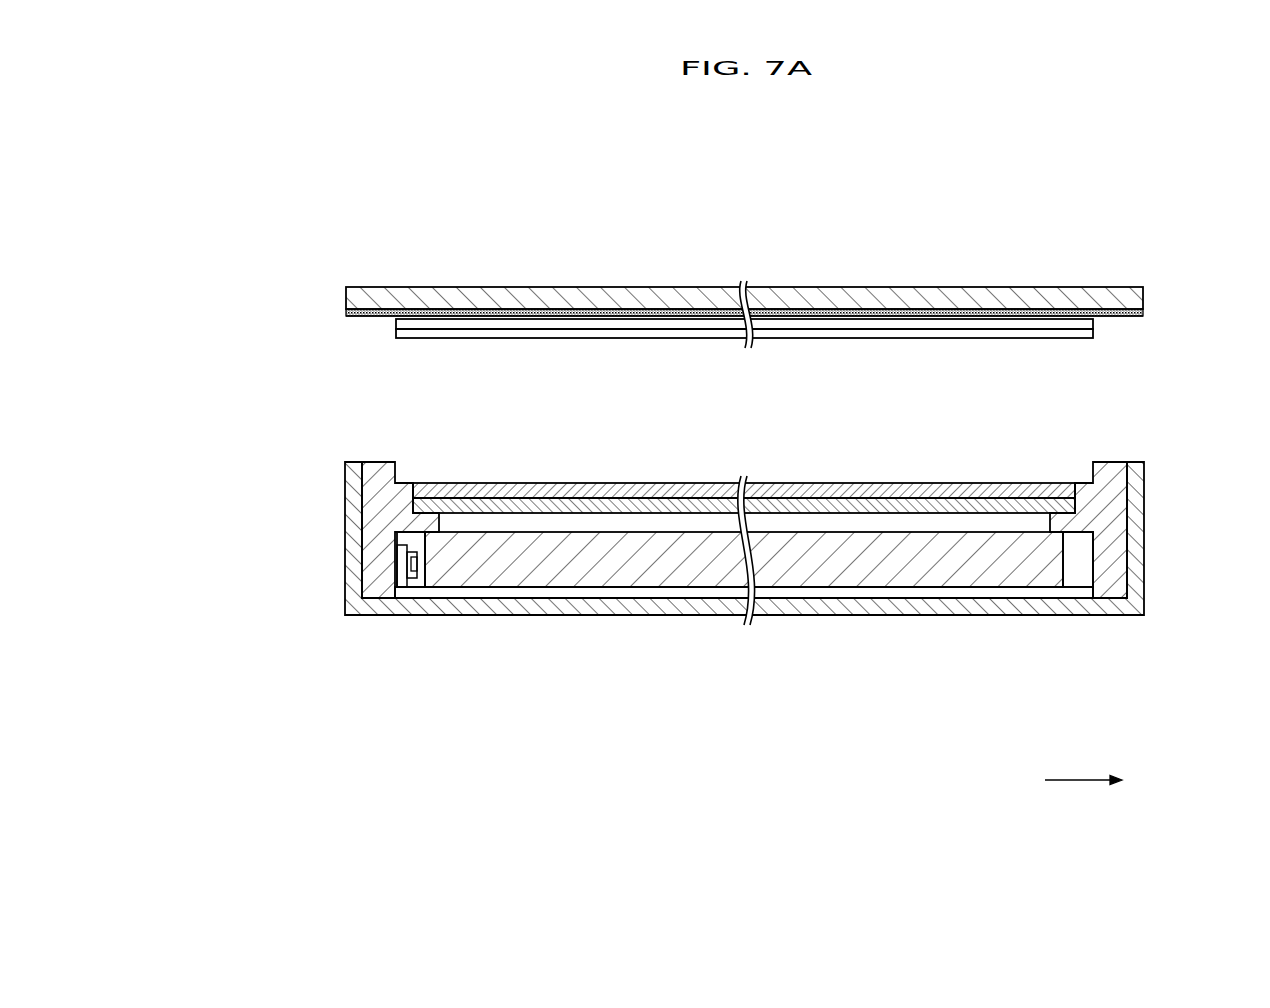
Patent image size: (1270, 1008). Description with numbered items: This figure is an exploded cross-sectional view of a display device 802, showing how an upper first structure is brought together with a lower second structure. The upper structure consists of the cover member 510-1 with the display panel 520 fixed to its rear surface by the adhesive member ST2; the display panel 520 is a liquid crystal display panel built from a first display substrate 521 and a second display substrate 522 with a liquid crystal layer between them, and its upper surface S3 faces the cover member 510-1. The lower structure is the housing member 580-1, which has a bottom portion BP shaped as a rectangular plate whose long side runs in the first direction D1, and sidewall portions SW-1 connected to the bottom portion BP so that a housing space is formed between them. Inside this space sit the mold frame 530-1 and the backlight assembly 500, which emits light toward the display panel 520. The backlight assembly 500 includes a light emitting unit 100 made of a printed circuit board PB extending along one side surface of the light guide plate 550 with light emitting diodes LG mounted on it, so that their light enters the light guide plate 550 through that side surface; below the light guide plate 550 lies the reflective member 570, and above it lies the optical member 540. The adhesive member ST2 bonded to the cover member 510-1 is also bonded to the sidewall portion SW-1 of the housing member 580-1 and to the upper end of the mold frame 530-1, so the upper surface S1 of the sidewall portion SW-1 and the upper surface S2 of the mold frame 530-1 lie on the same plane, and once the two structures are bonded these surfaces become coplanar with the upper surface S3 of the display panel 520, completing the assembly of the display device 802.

The display device 802 is at (1057, 176).
The cover member 510-1 is at (665, 299).
The adhesive member ST2 is at (605, 309).
The upper surface of the display panel S3 is at (418, 312).
The display panel 520 is at (744, 264).
The first display substrate 521 is at (490, 334).
The second display substrate 522 is at (546, 323).
The housing member 580-1 is at (703, 548).
The sidewall portion SW-1 is at (353, 570).
The bottom portion BP is at (386, 613).
The mold frame 530-1 is at (378, 527).
The upper surface of the sidewall portion S1 is at (352, 461).
The upper surface of the mold frame S2 is at (373, 461).
The backlight assembly 500 is at (740, 620).
The optical member 540 is at (636, 505).
The light guide plate 550 is at (568, 568).
The reflective member 570 is at (494, 591).
The light emitting unit 100 is at (421, 622).
The light emitting diodes LG is at (417, 565).
The printed circuit board PB is at (401, 584).
The first direction D1 is at (1099, 780).